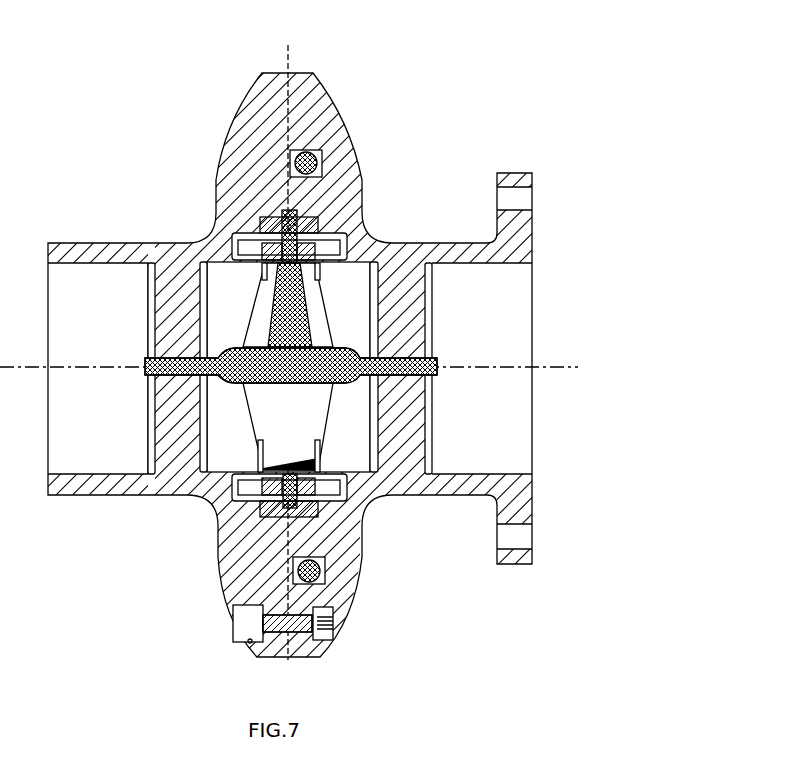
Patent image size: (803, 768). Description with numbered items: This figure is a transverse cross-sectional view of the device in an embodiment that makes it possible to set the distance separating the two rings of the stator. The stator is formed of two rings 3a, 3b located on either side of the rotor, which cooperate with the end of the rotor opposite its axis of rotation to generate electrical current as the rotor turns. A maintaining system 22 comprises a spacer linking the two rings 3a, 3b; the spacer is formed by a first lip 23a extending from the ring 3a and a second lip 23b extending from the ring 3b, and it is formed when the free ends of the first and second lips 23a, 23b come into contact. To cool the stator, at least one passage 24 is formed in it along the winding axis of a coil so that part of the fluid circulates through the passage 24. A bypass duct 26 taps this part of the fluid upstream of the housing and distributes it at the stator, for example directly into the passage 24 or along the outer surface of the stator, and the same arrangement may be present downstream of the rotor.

The maintaining system 22 is at (296, 195).
The first lip 23a is at (278, 236).
The second lip 23b is at (300, 205).
The passage 24 is at (263, 230).
The bypass duct 26 is at (265, 250).
The ring 3a is at (347, 255).
The ring 3b is at (347, 256).